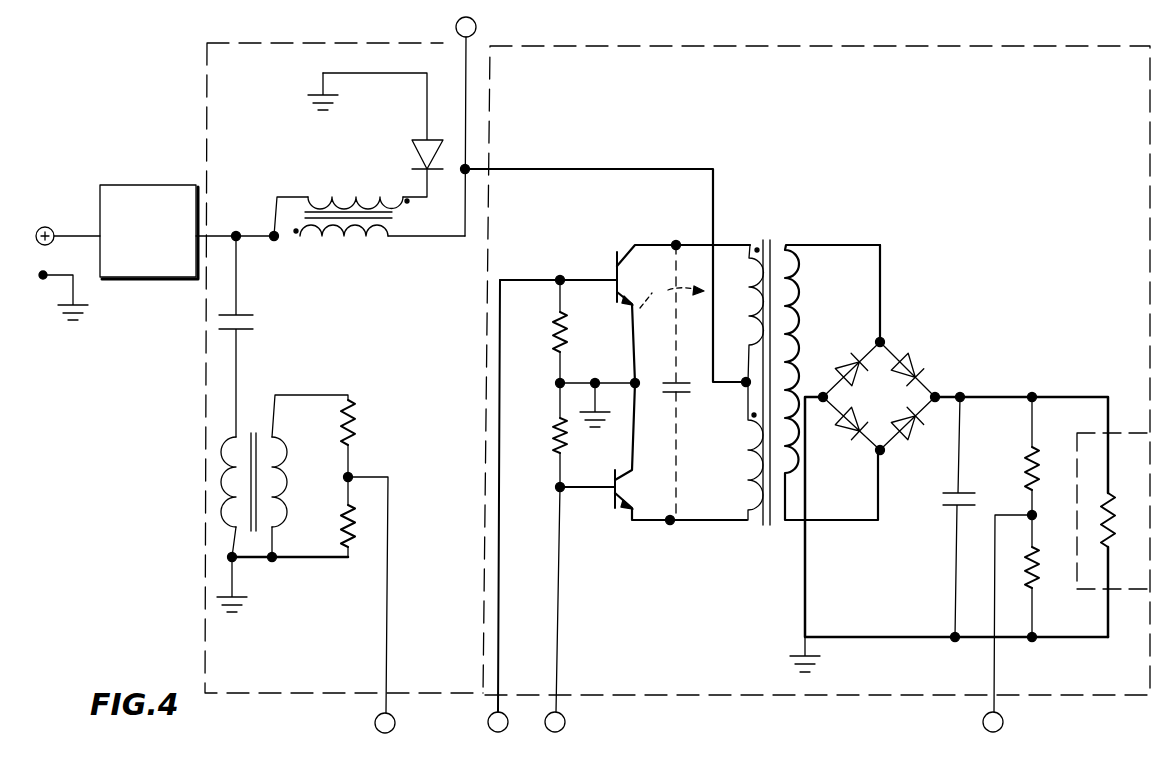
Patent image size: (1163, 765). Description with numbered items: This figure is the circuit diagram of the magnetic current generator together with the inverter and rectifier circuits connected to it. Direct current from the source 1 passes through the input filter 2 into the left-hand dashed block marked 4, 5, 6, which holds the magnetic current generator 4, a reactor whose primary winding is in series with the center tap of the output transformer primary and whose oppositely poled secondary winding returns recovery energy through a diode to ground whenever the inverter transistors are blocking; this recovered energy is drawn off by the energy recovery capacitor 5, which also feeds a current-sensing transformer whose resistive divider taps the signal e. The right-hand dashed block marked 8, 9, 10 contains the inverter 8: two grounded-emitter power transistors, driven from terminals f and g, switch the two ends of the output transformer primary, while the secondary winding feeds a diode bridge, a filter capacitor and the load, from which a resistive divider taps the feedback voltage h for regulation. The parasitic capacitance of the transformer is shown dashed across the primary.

The source 1 is at (52, 229).
The input filter 2 is at (143, 185).
The magnetic current generator 4 is at (339, 379).
The energy recovery capacitor 5 is at (339, 379).
The feedback transformer section 6 is at (322, 44).
The inverter 8 is at (807, 379).
The output transformer 9 is at (807, 379).
The rectifier and load circuit 10 is at (1000, 42).